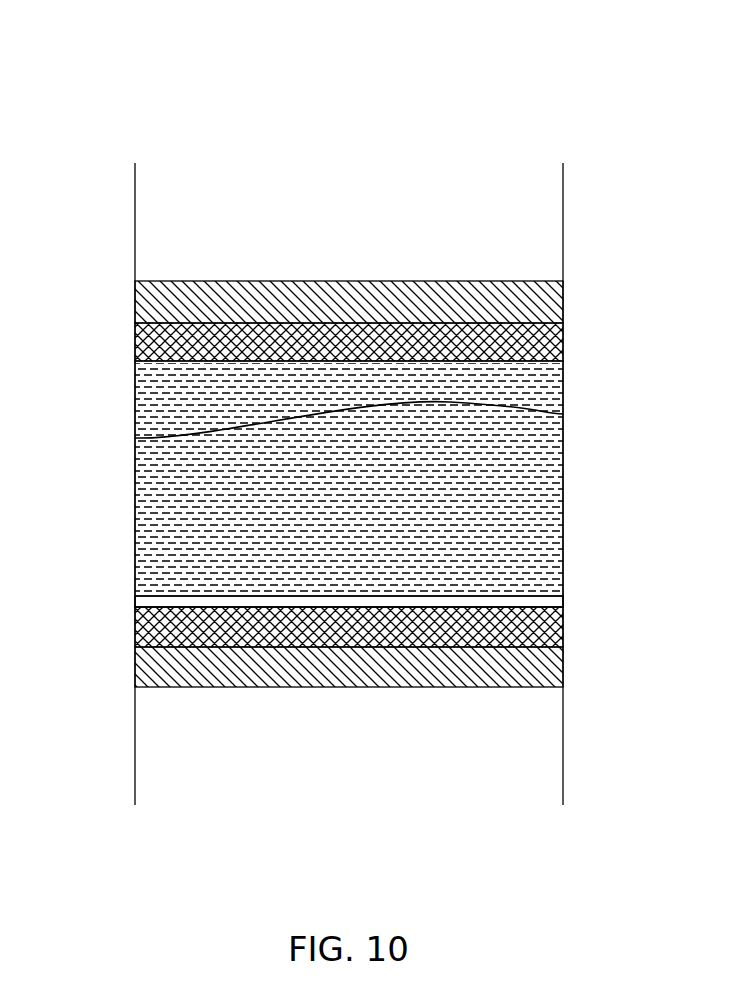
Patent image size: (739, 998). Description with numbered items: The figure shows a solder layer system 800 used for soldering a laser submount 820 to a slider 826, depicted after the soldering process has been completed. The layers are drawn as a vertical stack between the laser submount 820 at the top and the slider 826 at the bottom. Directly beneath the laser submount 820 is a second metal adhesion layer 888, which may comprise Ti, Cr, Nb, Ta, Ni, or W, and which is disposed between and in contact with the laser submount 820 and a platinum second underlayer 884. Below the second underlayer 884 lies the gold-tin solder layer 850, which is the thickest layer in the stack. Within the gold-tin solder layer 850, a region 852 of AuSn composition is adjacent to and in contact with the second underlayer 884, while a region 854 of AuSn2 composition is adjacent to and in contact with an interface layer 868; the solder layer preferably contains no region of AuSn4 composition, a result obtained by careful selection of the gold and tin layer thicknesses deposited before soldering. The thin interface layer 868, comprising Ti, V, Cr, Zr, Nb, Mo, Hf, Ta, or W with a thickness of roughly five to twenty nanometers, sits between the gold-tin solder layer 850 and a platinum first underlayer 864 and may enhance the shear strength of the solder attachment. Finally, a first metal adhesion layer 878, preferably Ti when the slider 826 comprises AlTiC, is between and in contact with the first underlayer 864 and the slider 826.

The solder layer system 800 is at (512, 76).
The laser submount 820 is at (550, 228).
The second metal adhesion layer 888 is at (550, 297).
The second underlayer 884 is at (550, 345).
The gold-tin solder layer 850 is at (354, 497).
The region of AuSn composition 852 is at (550, 395).
The region of AuSn2 composition 854 is at (550, 497).
The interface layer 868 is at (550, 601).
The first underlayer 864 is at (550, 637).
The first metal adhesion layer 878 is at (550, 677).
The slider 826 is at (550, 745).